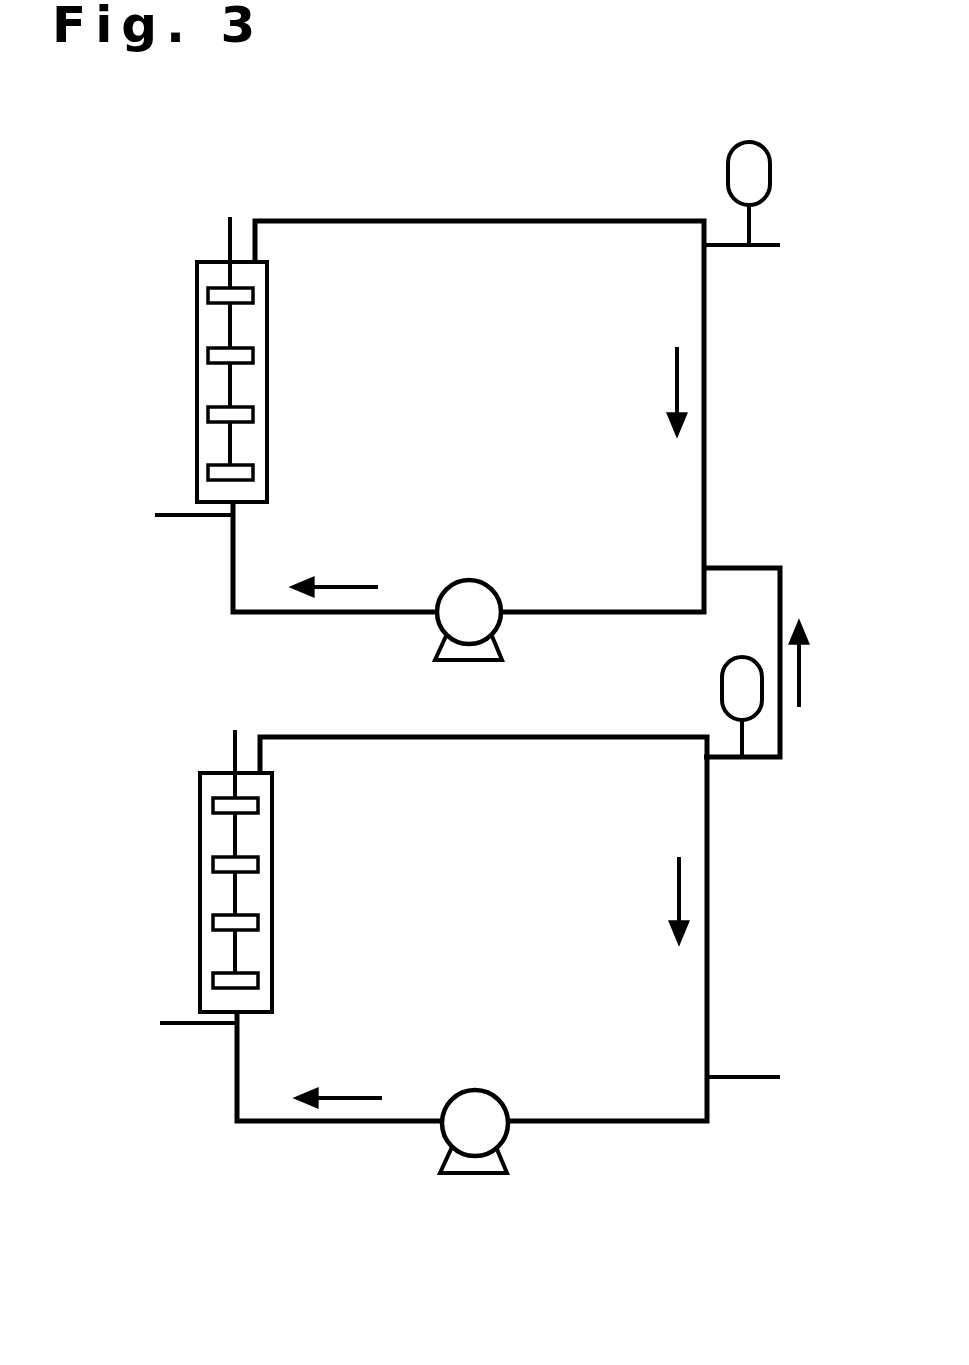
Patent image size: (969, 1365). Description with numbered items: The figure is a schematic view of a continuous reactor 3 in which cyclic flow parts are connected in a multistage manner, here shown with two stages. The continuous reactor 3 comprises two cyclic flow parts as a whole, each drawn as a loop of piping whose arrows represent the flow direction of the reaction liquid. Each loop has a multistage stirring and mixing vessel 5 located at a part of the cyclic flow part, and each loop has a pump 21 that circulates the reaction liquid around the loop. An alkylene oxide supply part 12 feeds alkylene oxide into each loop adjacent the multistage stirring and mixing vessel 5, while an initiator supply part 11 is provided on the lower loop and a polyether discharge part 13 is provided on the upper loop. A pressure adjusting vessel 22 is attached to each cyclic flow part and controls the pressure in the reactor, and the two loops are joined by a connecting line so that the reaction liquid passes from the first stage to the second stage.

The continuous reactor 3 is at (327, 1148).
The multistage stirring and mixing vessel 5 is at (267, 365).
The initiator supply part 11 is at (745, 1079).
The alkylene oxide supply part 12 is at (200, 517).
The polyether discharge part 13 is at (768, 247).
The pump 21 is at (463, 662).
The pressure adjusting vessel 22 is at (728, 178).